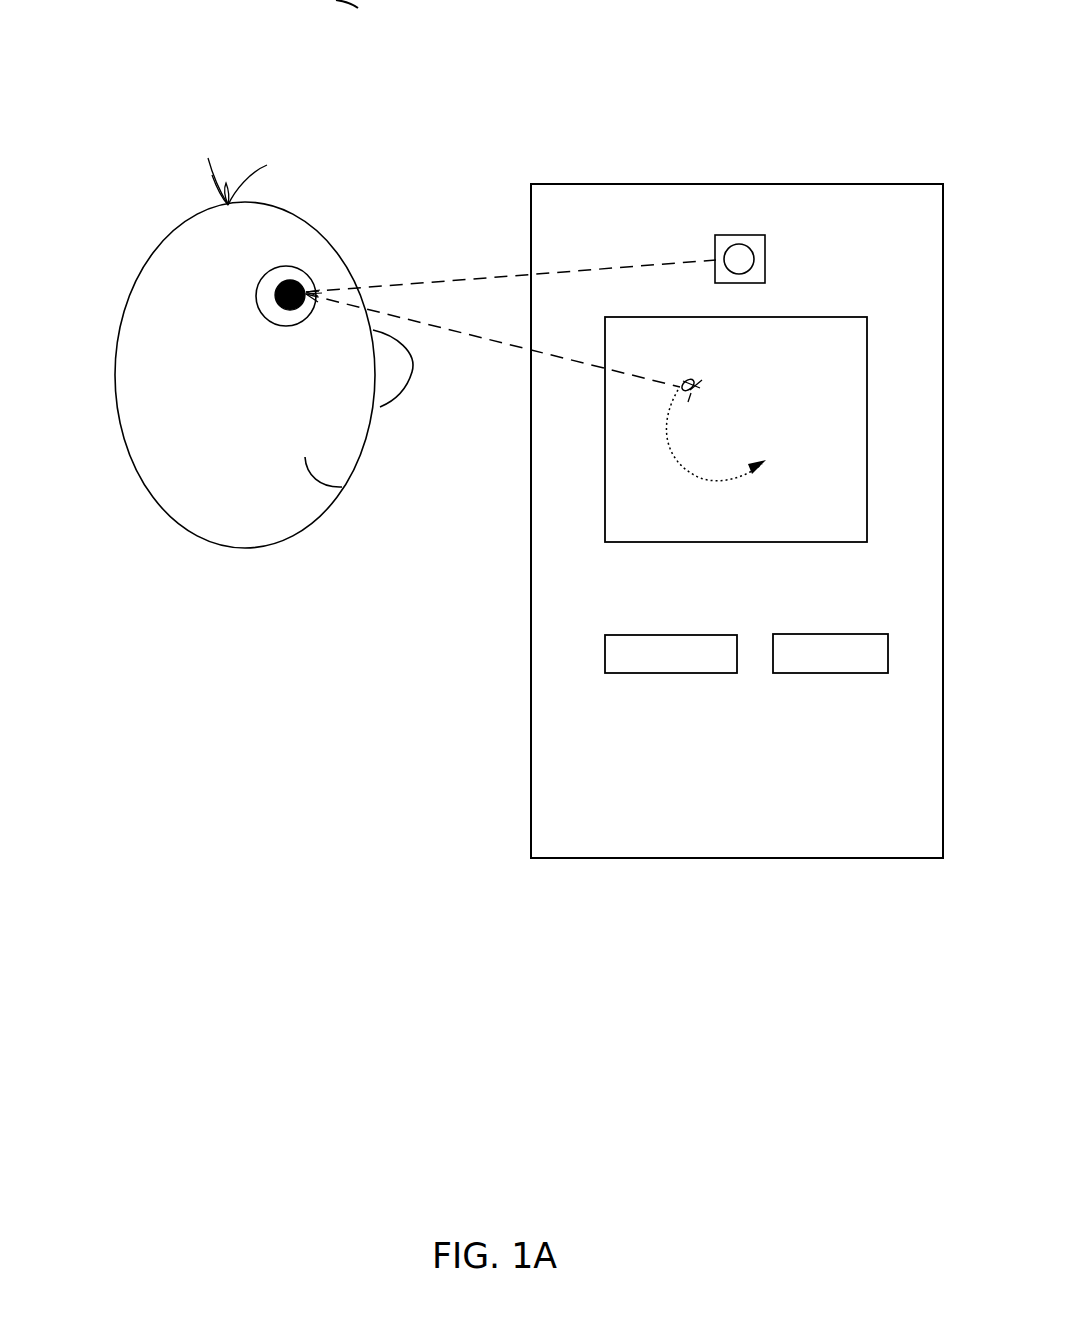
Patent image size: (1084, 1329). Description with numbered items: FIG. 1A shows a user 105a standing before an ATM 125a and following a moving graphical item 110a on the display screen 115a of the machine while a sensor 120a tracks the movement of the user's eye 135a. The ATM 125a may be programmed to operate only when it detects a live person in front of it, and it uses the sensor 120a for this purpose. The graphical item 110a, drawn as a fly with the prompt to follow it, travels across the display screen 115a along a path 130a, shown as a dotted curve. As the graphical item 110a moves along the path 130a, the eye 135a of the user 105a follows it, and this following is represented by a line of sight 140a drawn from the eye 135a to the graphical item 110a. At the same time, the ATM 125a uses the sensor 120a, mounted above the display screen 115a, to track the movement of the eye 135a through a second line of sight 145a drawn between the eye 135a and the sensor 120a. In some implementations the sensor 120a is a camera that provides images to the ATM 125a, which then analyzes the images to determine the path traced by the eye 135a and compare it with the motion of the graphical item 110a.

The user 105a is at (150, 257).
The graphical item 110a is at (673, 371).
The display screen 115a is at (851, 316).
The sensor 120a is at (714, 246).
The ATM 125a is at (733, 184).
The path 130a is at (685, 465).
The eye 135a is at (314, 267).
The line of sight 140a is at (500, 344).
The line of sight 145a is at (489, 281).